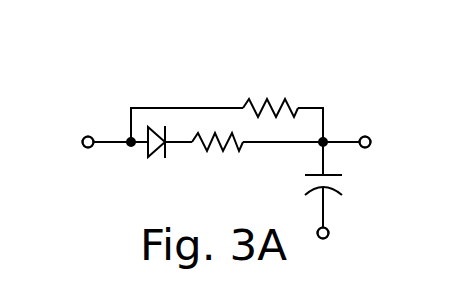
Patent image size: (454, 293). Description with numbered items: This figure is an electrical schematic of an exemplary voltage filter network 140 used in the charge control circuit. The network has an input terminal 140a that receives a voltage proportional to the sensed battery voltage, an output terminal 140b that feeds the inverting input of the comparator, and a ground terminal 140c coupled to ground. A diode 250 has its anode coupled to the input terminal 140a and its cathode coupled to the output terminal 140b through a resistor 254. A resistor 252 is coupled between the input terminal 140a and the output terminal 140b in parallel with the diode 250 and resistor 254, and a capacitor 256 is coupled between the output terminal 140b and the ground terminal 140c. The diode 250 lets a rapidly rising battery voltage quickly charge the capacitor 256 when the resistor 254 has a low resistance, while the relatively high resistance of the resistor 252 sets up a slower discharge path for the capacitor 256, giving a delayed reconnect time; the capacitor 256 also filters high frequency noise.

The voltage filter network 140 is at (238, 55).
The input terminal 140a is at (82, 142).
The output terminal 140b is at (388, 125).
The ground terminal 140c is at (326, 239).
The diode 250 is at (156, 156).
The resistor 252 is at (290, 100).
The resistor 254 is at (239, 146).
The capacitor 256 is at (330, 176).